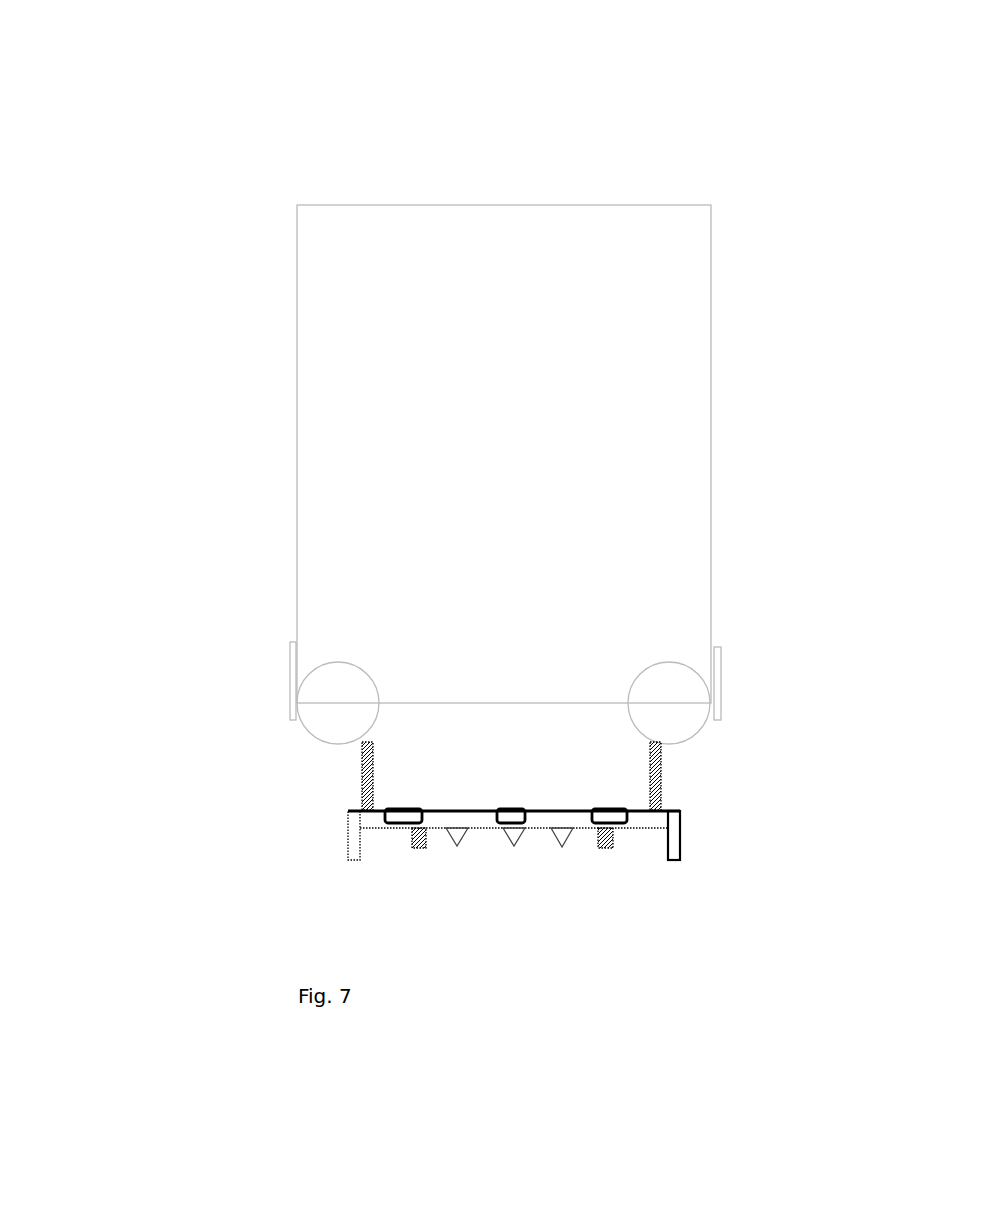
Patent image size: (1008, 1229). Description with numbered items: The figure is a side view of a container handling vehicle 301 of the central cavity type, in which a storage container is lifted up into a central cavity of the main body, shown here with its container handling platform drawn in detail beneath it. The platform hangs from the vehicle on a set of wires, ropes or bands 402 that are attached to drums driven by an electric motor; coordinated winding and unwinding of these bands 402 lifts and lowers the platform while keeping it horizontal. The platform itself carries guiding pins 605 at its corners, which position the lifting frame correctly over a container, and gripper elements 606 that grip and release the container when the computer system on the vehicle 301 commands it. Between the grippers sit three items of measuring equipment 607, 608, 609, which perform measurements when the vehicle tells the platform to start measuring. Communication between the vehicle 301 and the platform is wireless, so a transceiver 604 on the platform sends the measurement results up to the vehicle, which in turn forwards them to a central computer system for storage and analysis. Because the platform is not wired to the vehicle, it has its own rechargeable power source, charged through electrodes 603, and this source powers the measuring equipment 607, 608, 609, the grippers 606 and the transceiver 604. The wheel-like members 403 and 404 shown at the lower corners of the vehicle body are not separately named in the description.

The container handling vehicle 301 is at (505, 205).
The wires, ropes or bands 402 is at (360, 782).
The left roller wheel 403 is at (307, 733).
The right roller wheel 404 is at (722, 687).
The electrodes for charging the auxiliary power source 603 is at (618, 815).
The transceiver 604 is at (517, 808).
The guiding pins 605 is at (675, 853).
The gripper elements 606 is at (418, 847).
The measuring equipment 607 is at (455, 830).
The measuring equipment 608 is at (562, 832).
The measuring equipment 609 is at (514, 830).